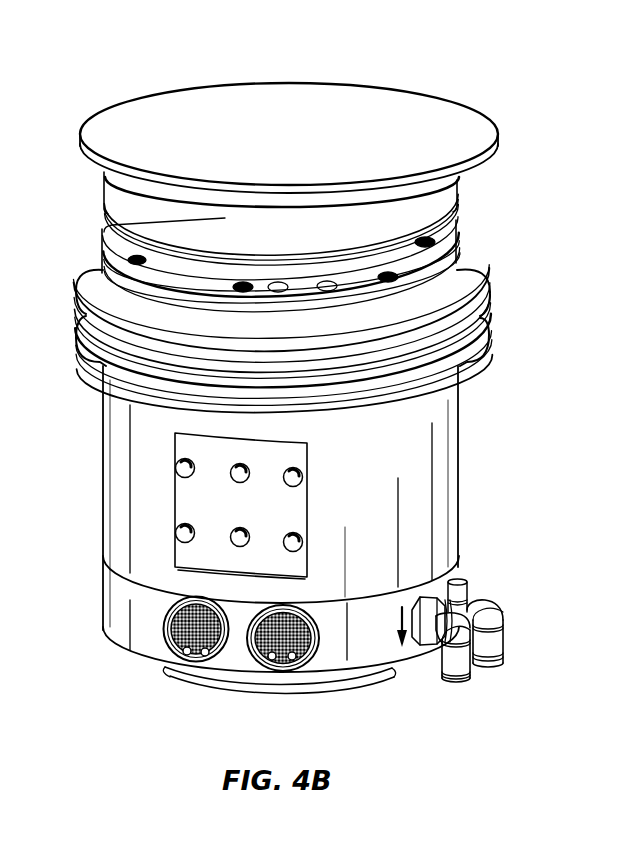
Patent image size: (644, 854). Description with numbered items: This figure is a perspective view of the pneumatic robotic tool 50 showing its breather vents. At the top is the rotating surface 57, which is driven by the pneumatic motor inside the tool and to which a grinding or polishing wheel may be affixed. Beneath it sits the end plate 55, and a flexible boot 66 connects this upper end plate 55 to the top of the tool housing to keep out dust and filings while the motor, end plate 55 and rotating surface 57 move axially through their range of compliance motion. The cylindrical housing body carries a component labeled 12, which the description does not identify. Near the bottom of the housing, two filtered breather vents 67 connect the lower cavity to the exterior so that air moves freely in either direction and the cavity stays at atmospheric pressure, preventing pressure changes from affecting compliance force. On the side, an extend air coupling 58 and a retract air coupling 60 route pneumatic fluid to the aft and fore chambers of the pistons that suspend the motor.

The pneumatic robotic tool 50 is at (582, 332).
The rotating surface 57 is at (445, 135).
The end plate 55 is at (442, 254).
The flexible boot 66 is at (470, 273).
The housing body 12 is at (417, 487).
The breather vents 67 is at (258, 655).
The extend air coupling 58 is at (493, 638).
The retract air coupling 60 is at (455, 658).